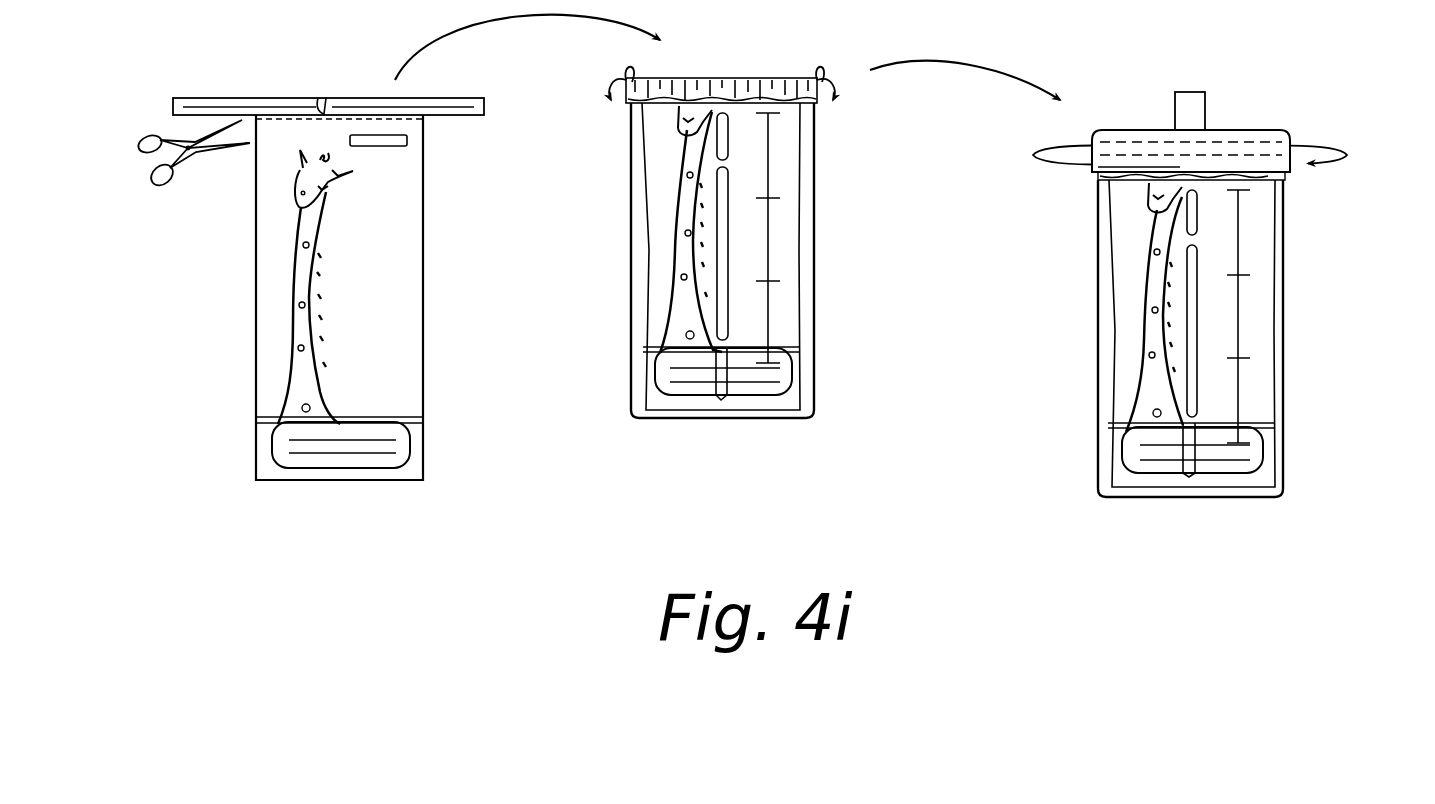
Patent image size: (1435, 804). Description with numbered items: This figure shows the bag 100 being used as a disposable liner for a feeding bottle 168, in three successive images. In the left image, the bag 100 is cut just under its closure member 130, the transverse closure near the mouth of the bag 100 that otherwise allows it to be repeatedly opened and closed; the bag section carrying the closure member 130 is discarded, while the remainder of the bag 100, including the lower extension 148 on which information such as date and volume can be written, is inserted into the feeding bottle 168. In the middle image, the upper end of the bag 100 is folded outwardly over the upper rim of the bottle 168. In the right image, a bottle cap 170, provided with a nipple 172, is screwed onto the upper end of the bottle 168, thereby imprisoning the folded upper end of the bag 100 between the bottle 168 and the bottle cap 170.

The bag 100 is at (783, 295).
The closure member 130 is at (230, 92).
The extension 148 is at (390, 461).
The feeding bottle 168 is at (810, 228).
The bottle cap 170 is at (1258, 130).
The nipple 172 is at (1193, 107).